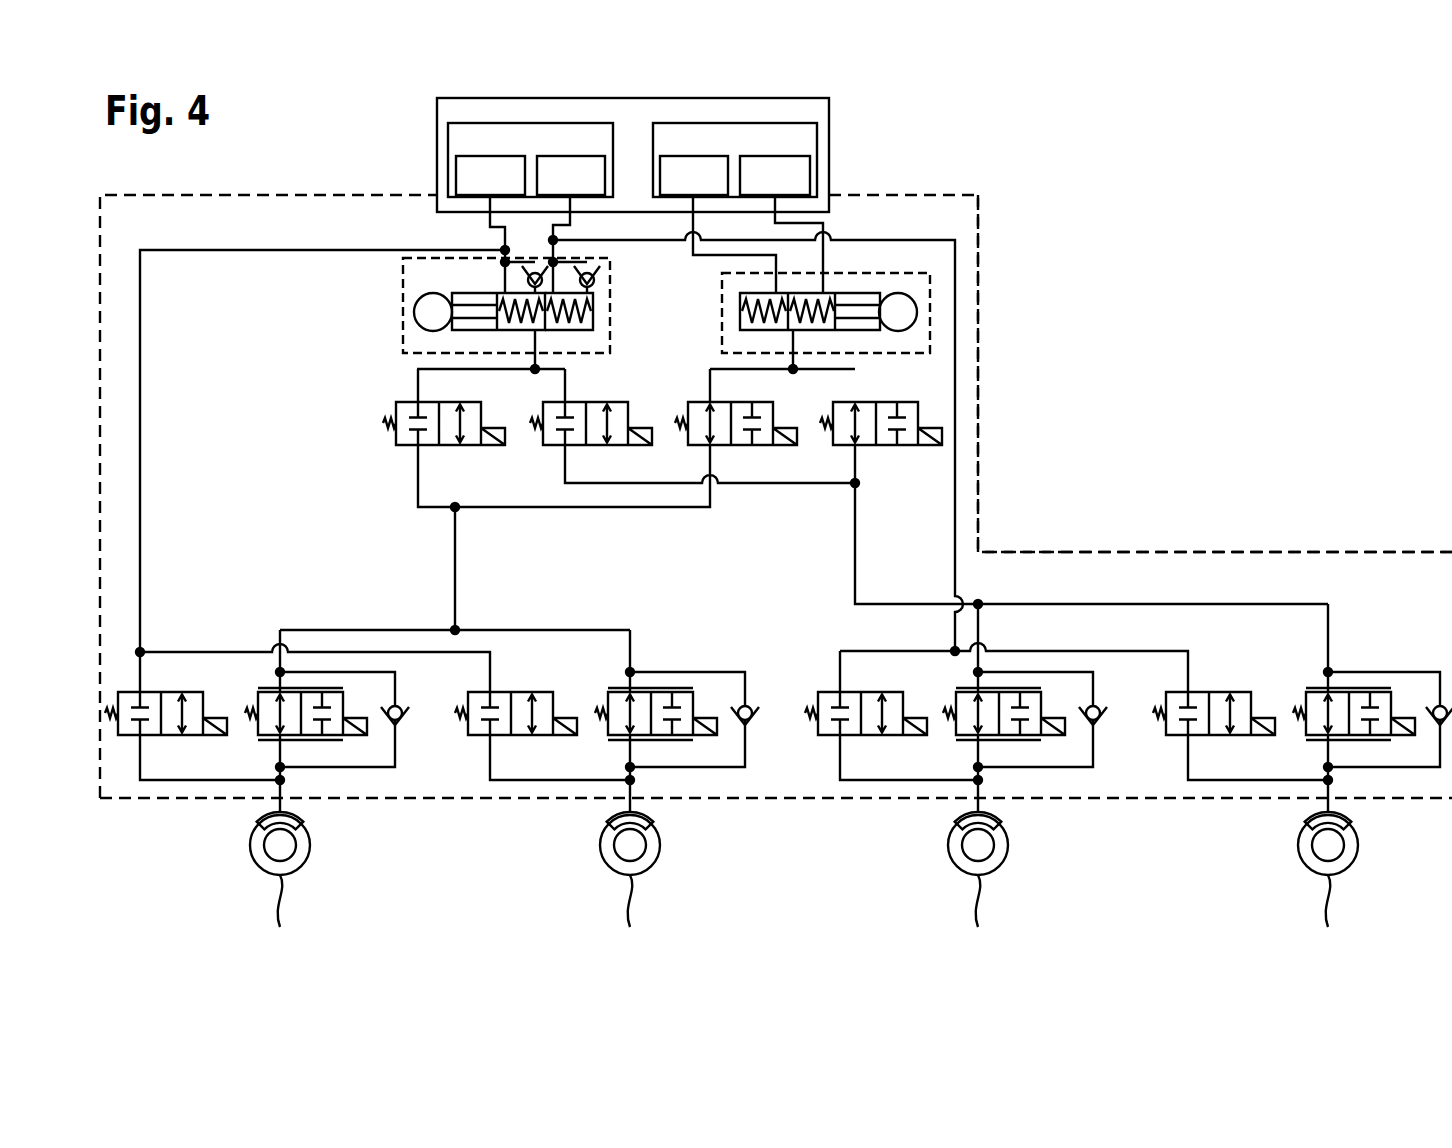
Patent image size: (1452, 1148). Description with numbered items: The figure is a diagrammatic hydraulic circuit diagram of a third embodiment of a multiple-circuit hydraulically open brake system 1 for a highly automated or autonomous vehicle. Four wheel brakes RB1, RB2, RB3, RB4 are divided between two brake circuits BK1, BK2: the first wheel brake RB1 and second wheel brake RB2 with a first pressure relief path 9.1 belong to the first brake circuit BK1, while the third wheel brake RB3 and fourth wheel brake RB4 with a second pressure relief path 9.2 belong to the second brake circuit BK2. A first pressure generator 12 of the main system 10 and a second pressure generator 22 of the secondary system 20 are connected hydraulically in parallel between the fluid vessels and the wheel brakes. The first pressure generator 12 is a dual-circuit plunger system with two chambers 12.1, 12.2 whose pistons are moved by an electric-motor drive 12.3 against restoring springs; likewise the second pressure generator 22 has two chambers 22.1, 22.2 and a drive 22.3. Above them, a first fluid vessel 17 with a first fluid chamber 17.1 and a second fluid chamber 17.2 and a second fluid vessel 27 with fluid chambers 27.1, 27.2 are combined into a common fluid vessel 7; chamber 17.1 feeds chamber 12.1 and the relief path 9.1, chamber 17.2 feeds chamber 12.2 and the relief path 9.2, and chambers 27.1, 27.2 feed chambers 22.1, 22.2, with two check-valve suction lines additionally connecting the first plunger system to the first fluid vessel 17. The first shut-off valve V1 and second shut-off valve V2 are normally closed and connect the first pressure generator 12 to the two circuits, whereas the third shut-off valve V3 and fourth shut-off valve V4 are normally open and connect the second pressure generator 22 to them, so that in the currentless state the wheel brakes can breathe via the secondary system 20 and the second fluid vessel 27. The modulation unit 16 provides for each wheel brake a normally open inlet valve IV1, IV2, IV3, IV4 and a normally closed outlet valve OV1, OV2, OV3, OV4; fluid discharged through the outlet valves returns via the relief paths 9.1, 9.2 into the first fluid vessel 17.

The multiple-circuit hydraulically open brake system 1 is at (1282, 274).
The common fluid vessel 7 is at (829, 98).
The first pressure relief path 9.1 is at (140, 575).
The second pressure relief path 9.2 is at (923, 240).
The main system 10 is at (1196, 552).
The first pressure generator 12 is at (403, 348).
The first chamber of the first plunger system 12.1 is at (500, 288).
The second chamber of the first plunger system 12.2 is at (593, 300).
The drive of the first pressure generator 12.3 is at (414, 312).
The modulation unit 16 is at (1250, 400).
The first fluid vessel 17 is at (450, 127).
The first fluid chamber 17.1 is at (456, 182).
The second fluid chamber 17.2 is at (533, 157).
The secondary system 20 is at (930, 273).
The second pressure generator 22 is at (930, 352).
The first chamber of the second plunger system 22.1 is at (830, 293).
The second chamber of the second plunger system 22.2 is at (742, 328).
The drive of the second pressure generator 22.3 is at (916, 312).
The second fluid vessel 27 is at (783, 123).
The first fluid chamber of the second fluid vessel 27.1 is at (807, 156).
The second fluid chamber of the second fluid vessel 27.2 is at (665, 155).
The first shut-off valve V1 is at (444, 440).
The second shut-off valve V2 is at (591, 440).
The third shut-off valve V3 is at (736, 440).
The fourth shut-off valve V4 is at (881, 440).
The first outlet valve OV1 is at (192, 736).
The second outlet valve OV2 is at (542, 736).
The third outlet valve OV3 is at (891, 736).
The fourth outlet valve OV4 is at (1240, 736).
The first inlet valve IV1 is at (317, 721).
The second inlet valve IV2 is at (667, 721).
The third inlet valve IV3 is at (1015, 708).
The fourth inlet valve IV4 is at (1362, 708).
The first wheel brake RB1 is at (280, 884).
The second wheel brake RB2 is at (630, 884).
The third wheel brake RB3 is at (978, 884).
The fourth wheel brake RB4 is at (1328, 884).
The first brake circuit BK1 is at (437, 853).
The second brake circuit BK2 is at (1152, 853).